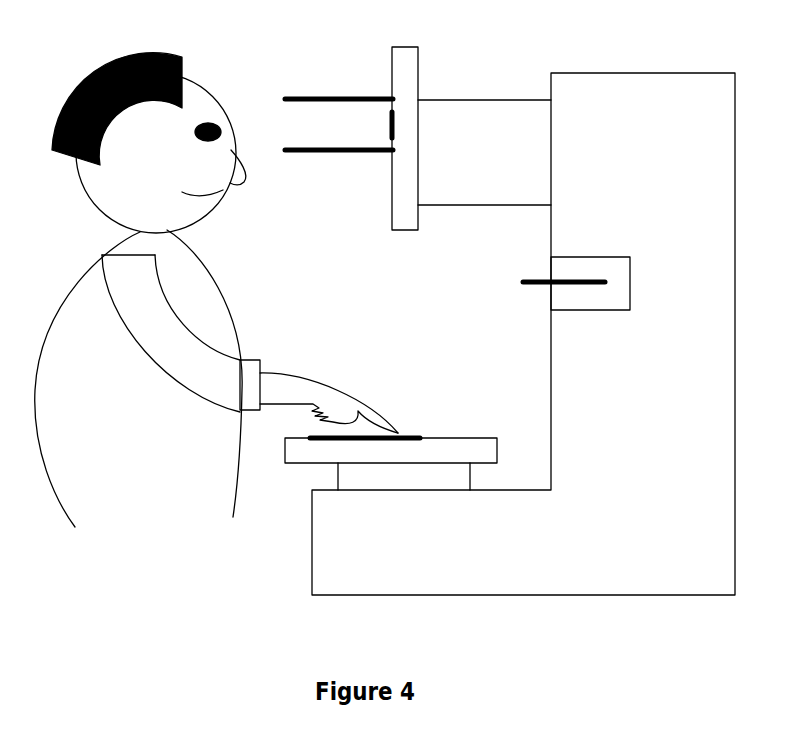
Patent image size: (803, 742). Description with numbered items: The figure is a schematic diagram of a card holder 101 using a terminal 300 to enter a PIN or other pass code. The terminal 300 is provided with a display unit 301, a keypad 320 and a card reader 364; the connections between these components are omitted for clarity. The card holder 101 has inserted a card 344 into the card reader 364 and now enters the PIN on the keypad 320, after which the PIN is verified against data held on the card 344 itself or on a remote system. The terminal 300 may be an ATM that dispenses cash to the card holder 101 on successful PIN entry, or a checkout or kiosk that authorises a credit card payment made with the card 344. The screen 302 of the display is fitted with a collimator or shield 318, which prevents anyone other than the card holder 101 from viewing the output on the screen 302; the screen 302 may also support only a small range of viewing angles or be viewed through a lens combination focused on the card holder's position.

The card holder 101 is at (216, 290).
The terminal 300 is at (510, 334).
The display unit 301 is at (387, 243).
The screen 302 is at (405, 137).
The collimator or shield 318 is at (323, 82).
The keypad 320 is at (417, 427).
The card 344 is at (590, 270).
The card reader 364 is at (598, 317).